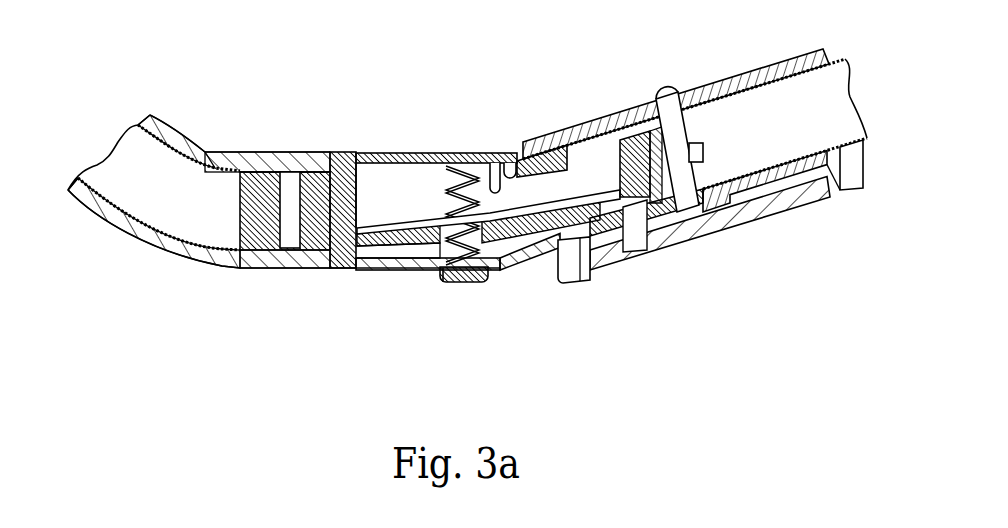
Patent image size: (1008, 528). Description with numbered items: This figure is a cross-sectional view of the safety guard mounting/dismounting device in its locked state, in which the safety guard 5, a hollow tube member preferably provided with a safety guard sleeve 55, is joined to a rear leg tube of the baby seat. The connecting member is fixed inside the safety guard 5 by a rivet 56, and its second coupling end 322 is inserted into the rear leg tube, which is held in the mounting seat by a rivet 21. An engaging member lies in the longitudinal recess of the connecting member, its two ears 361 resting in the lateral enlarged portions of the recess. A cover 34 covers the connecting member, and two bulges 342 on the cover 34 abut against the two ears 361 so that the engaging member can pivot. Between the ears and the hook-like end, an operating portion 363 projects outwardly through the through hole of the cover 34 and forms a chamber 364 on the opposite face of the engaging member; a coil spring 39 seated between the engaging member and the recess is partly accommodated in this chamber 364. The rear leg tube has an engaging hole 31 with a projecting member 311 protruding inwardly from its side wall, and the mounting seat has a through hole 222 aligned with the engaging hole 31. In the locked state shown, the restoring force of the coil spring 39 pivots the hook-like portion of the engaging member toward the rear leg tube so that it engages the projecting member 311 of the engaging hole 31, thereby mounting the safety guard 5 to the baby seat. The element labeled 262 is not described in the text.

The safety guard 5 is at (204, 152).
The safety guard sleeve 55 is at (177, 250).
The rivet 56 is at (293, 168).
The ears 361 is at (373, 168).
The coil spring 39 is at (467, 167).
The cover 34 is at (337, 270).
The bulges 342 is at (367, 267).
The operating portion 363 is at (463, 279).
The chamber 364 is at (453, 279).
The second coupling end 322 is at (593, 133).
The projecting member 311 is at (557, 177).
The lower slab 262 is at (665, 235).
The engaging hole 31 is at (630, 213).
The through hole 222 is at (597, 267).
The rivet 21 is at (663, 107).